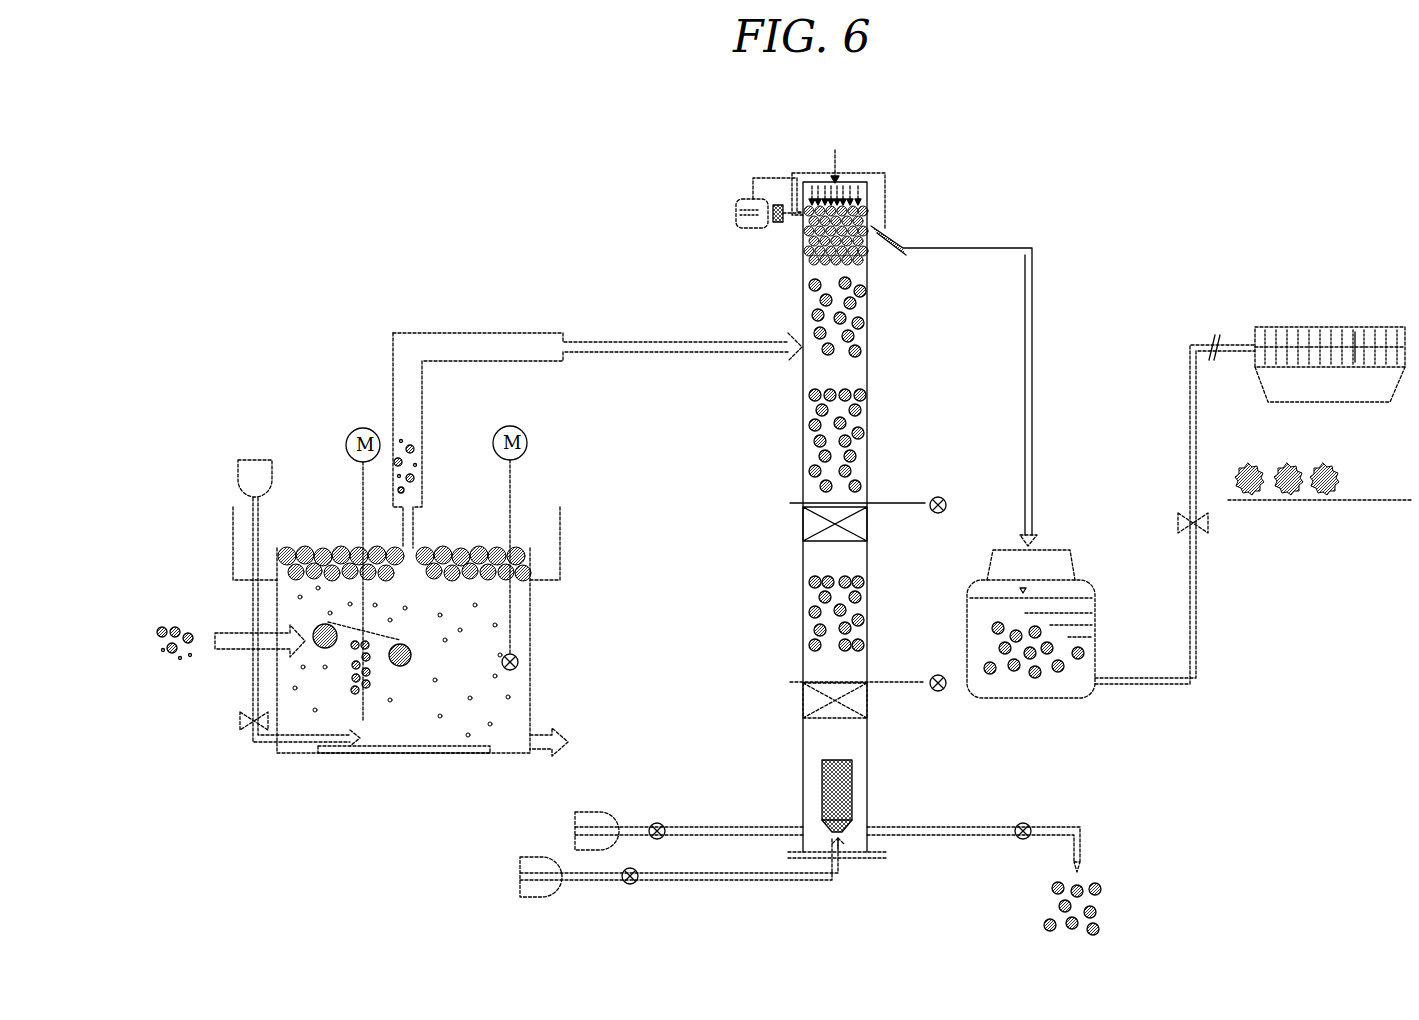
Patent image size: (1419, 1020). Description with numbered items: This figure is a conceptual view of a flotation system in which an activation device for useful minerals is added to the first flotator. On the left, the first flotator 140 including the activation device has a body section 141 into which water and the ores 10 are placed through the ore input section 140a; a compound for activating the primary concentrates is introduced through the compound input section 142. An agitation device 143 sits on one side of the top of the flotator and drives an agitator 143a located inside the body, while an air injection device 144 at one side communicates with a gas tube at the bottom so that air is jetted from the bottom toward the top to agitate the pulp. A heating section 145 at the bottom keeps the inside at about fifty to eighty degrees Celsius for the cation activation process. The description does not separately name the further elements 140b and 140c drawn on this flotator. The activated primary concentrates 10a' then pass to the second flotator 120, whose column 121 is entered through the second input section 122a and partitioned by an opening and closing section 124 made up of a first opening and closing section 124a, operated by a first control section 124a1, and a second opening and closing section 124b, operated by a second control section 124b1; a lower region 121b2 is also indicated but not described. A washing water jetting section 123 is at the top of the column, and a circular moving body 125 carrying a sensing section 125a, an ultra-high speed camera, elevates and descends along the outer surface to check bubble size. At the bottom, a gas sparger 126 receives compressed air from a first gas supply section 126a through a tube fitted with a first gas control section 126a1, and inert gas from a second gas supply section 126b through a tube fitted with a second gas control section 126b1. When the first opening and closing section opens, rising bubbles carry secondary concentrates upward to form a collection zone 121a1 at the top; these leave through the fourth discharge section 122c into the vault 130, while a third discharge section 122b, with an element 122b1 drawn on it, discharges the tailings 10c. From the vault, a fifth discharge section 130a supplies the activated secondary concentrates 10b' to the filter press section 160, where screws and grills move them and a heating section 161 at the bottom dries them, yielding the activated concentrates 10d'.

The ores 10 is at (190, 660).
The activated primary concentrates 10a' is at (440, 466).
The activated secondary concentrates 10b' is at (1049, 709).
The tailings 10c is at (1102, 891).
The activated concentrates 10d' is at (1320, 512).
The second flotator 120 is at (952, 150).
The column 121 is at (802, 280).
The collection zone 121a1 is at (922, 175).
The separation space 121b2 is at (922, 275).
The second input section 122a is at (788, 348).
The third discharge section 122b is at (973, 828).
The drain valve 122b1 is at (1018, 840).
The fourth discharge section 122c is at (1034, 290).
The washing water jetting section 123 is at (793, 173).
The opening and closing section 124 is at (829, 585).
The first opening and closing section 124a is at (802, 520).
The first control section 124a1 is at (943, 497).
The second opening and closing section 124b is at (802, 700).
The second control section 124b1 is at (936, 675).
The circular moving body 125 is at (868, 173).
The sensing section 125a is at (736, 212).
The gas sparger 126 is at (853, 790).
The first gas supply section 126a is at (575, 823).
The first gas control section 126a1 is at (658, 822).
The second gas supply section 126b is at (520, 866).
The second gas control section 126b1 is at (636, 884).
The vault 130 is at (1097, 652).
The fifth discharge section 130a is at (1198, 588).
The first flotator including the activation device 140 is at (247, 436).
The ore input section 140a is at (228, 630).
The discharge hopper 140b is at (413, 523).
The outlet 140c is at (548, 733).
The body section 141 is at (532, 620).
The compound input section 142 is at (528, 443).
The agitation device 143 is at (362, 428).
The agitator 143a is at (400, 667).
The air injection device 144 is at (240, 475).
The heating section 145 is at (390, 755).
The filter press section 160 is at (1255, 303).
The heating section 161 is at (1382, 404).